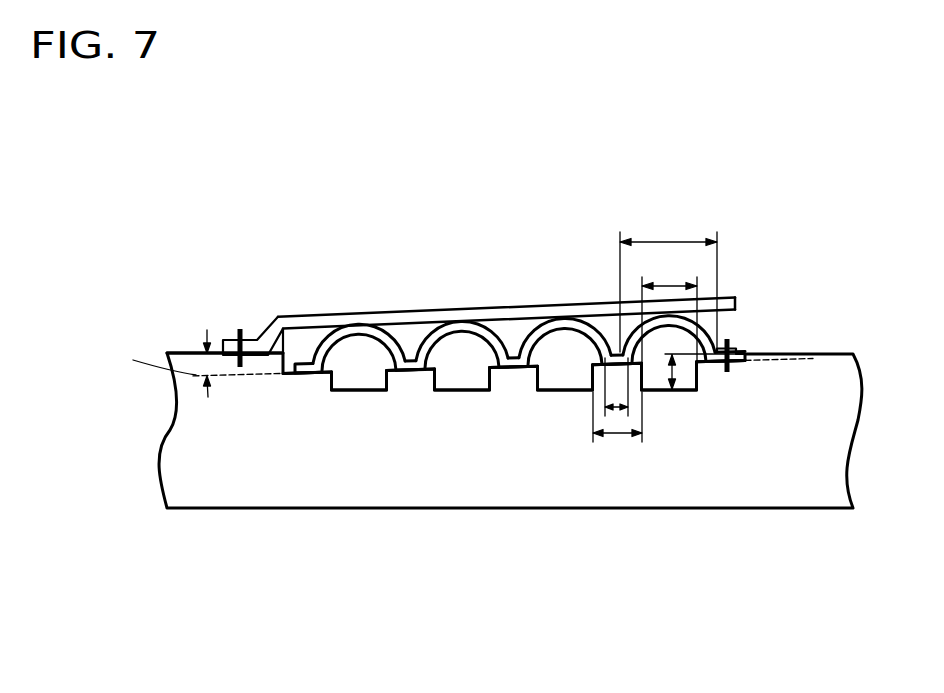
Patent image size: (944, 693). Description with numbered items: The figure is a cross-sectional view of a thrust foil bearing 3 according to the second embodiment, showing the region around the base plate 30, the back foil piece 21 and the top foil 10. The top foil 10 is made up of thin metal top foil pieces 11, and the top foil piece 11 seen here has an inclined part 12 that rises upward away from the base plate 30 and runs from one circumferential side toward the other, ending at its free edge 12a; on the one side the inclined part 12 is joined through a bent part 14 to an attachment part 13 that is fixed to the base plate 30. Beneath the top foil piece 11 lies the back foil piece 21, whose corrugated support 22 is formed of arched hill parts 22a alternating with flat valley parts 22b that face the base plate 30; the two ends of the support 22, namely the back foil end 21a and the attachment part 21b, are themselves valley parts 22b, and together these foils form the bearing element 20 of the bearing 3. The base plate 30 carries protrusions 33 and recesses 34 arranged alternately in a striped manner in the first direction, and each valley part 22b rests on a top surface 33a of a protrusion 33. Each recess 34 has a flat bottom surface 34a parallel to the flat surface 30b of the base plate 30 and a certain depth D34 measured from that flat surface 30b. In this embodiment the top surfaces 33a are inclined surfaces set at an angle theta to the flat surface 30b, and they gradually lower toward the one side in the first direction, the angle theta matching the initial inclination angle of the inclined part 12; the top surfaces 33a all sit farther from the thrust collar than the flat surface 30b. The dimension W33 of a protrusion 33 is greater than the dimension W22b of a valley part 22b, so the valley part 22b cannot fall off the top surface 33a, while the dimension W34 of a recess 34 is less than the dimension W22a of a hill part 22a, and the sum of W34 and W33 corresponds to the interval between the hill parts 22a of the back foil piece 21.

The thrust foil bearing 3 is at (343, 236).
The top foil 10 is at (509, 254).
The top foil piece 11 is at (505, 306).
The inclined part 12 is at (433, 307).
The end of cover sheet 12a is at (738, 301).
The attachment part 13 is at (238, 327).
The bent part 14 is at (252, 338).
The piezoelectric element 20 is at (532, 484).
The back foil piece 21 is at (532, 469).
The back foil end 21a is at (301, 362).
The attachment part 21b is at (733, 350).
The support 22 is at (514, 469).
The hill part 22a is at (461, 325).
The valley part 22b is at (528, 348).
The base plate 30 is at (479, 448).
The flat surface 30b is at (192, 351).
The protrusion 33 is at (514, 486).
The top surface 33a is at (427, 372).
The recess 34 is at (514, 500).
The bottom surface 34a is at (455, 384).
The dimension of hill part W22a is at (668, 282).
The dimension of valley part W22b is at (617, 412).
The dimension of protrusion W33 is at (618, 438).
The dimension of recess W34 is at (669, 307).
The depth of recess D34 is at (684, 370).